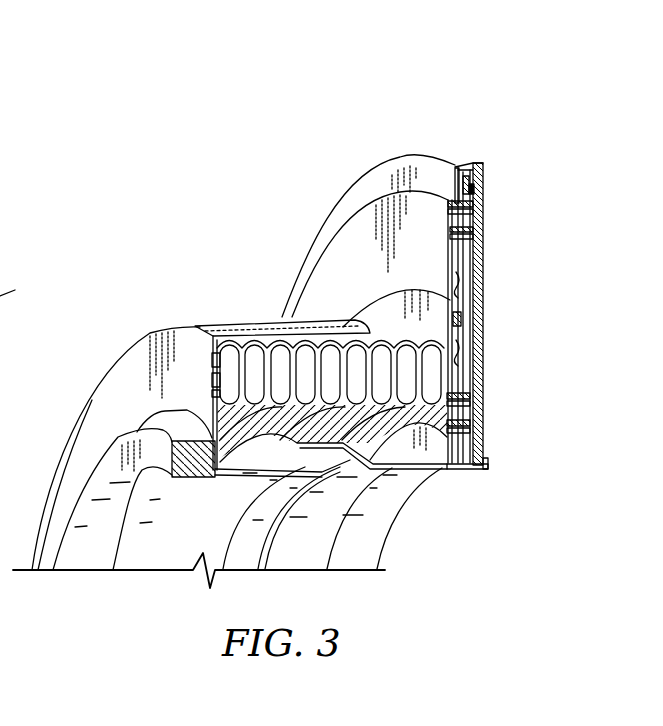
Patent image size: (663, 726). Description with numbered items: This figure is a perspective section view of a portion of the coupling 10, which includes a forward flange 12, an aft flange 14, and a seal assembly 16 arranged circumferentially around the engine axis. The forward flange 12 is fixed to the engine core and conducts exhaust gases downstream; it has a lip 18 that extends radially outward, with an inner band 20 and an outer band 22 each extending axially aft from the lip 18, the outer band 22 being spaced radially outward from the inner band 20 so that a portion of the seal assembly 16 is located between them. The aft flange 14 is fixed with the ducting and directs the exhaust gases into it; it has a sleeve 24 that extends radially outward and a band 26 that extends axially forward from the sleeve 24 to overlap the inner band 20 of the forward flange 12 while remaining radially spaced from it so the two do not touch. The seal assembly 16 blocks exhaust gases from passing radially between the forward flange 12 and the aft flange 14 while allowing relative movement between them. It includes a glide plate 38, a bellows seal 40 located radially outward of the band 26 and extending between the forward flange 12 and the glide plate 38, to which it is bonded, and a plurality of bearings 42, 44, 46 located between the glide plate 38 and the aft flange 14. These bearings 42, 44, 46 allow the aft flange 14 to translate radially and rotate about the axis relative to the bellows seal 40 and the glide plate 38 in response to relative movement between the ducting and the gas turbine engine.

The coupling 10 is at (182, 178).
The forward flange 12 is at (131, 335).
The aft flange 14 is at (481, 160).
The seal assembly 16 is at (308, 330).
The lip 18 is at (117, 416).
The inner band 20 is at (137, 557).
The outer band 22 is at (253, 330).
The sleeve 24 is at (488, 274).
The band 26 is at (435, 478).
The glide plate 38 is at (372, 235).
The bellows seal 40 is at (380, 330).
The bearing 42 is at (452, 197).
The bearing 44 is at (466, 197).
The bearing 46 is at (483, 191).